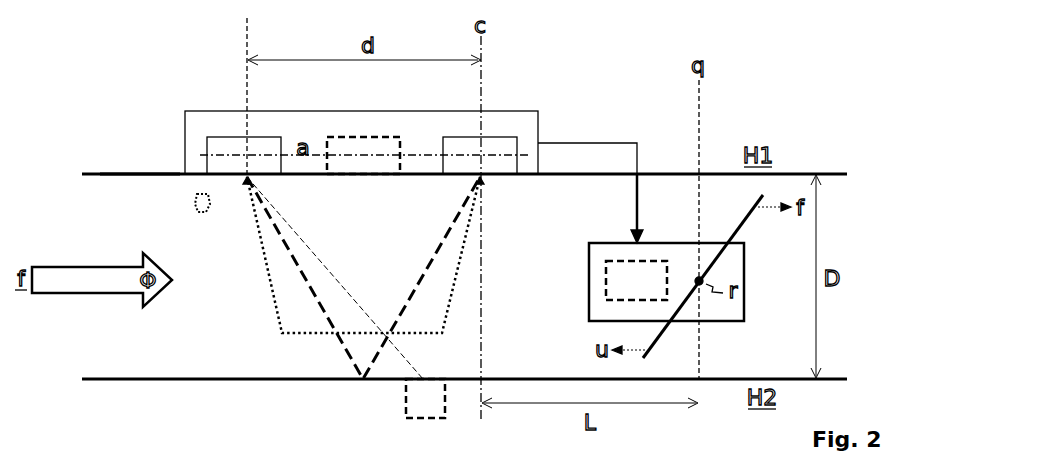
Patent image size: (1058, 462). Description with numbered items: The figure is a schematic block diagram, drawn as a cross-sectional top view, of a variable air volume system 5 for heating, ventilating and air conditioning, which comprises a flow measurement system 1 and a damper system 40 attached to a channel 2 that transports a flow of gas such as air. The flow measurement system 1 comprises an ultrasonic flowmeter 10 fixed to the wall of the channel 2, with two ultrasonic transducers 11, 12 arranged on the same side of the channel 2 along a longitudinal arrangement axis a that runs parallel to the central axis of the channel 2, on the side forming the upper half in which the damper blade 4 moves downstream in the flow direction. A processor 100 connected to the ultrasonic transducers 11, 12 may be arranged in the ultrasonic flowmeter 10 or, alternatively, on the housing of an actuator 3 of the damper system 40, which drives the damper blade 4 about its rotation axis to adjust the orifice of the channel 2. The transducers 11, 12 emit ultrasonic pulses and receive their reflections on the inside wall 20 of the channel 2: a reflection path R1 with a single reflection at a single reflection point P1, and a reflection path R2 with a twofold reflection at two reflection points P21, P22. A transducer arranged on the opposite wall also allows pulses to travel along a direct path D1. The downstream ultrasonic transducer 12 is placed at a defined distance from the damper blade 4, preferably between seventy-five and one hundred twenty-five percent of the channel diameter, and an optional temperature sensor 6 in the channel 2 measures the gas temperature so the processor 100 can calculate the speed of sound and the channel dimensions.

The flow measurement system 1 is at (181, 400).
The channel 2 is at (96, 176).
The actuator 3 is at (593, 314).
The damper blade 4 is at (710, 276).
The variable air volume system 5 is at (401, 176).
The temperature sensor 6 is at (193, 206).
The ultrasonic flowmeter 10 is at (205, 118).
The ultrasonic transducer 11 is at (266, 142).
The ultrasonic transducer 12 is at (498, 145).
The inside wall 20 is at (141, 164).
The damper system 40 is at (682, 228).
The processor 100 is at (362, 143).
The reflection path R1 is at (363, 278).
The reflection path R2 is at (347, 255).
The direct path D1 is at (335, 278).
The reflection point P1 is at (366, 400).
The reflection point P21 is at (439, 352).
The reflection point P22 is at (281, 352).